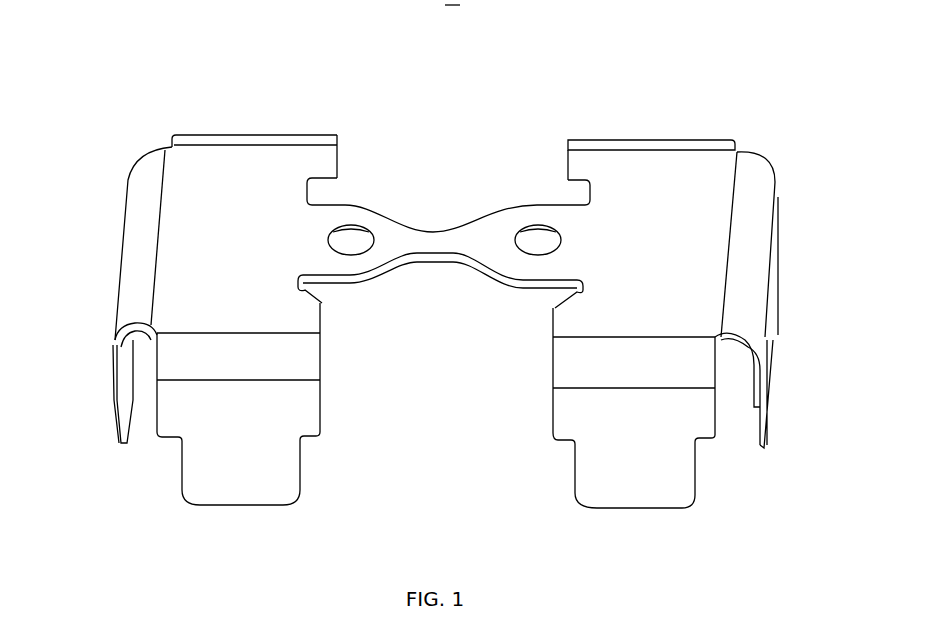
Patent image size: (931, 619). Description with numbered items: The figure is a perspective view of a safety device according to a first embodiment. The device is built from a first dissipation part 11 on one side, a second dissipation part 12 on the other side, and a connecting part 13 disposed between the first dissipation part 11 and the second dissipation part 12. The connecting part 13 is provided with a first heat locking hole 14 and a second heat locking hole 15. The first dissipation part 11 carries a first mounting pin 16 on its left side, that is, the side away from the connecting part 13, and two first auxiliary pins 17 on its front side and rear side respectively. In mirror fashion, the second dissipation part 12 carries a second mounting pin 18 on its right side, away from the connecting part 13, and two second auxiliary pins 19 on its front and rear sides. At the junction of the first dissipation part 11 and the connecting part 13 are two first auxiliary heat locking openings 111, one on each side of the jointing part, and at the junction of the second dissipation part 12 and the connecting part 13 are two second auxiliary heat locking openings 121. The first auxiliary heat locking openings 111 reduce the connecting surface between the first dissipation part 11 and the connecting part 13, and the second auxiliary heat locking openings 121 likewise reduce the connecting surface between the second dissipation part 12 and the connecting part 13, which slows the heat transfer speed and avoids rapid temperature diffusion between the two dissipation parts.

The first dissipation part 11 is at (253, 183).
The second dissipation part 12 is at (662, 193).
The connecting part 13 is at (432, 240).
The first heat locking hole 14 is at (350, 242).
The second heat locking hole 15 is at (548, 240).
The first mounting pin 16 is at (112, 372).
The first auxiliary pin 17 is at (333, 188).
The second mounting pin 18 is at (753, 390).
The second auxiliary pin 19 is at (650, 140).
The first auxiliary heat locking opening 111 is at (312, 198).
The second auxiliary heat locking opening 121 is at (567, 187).